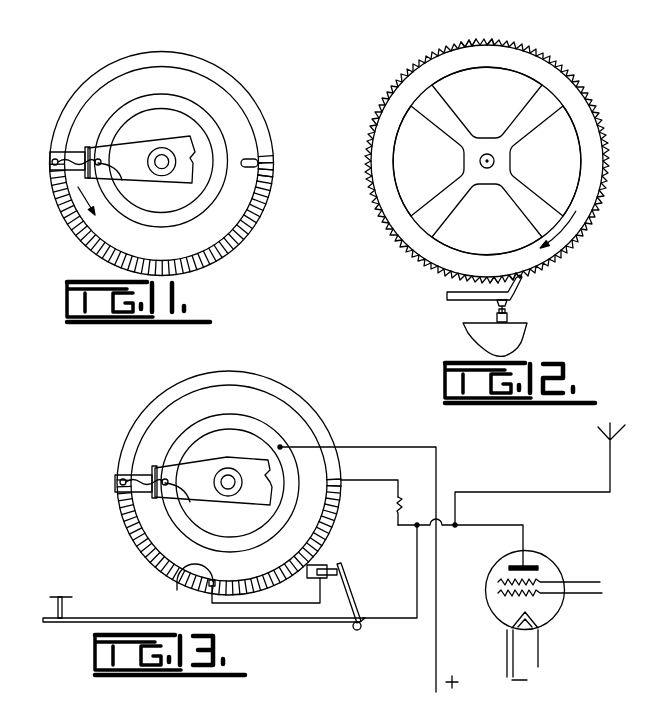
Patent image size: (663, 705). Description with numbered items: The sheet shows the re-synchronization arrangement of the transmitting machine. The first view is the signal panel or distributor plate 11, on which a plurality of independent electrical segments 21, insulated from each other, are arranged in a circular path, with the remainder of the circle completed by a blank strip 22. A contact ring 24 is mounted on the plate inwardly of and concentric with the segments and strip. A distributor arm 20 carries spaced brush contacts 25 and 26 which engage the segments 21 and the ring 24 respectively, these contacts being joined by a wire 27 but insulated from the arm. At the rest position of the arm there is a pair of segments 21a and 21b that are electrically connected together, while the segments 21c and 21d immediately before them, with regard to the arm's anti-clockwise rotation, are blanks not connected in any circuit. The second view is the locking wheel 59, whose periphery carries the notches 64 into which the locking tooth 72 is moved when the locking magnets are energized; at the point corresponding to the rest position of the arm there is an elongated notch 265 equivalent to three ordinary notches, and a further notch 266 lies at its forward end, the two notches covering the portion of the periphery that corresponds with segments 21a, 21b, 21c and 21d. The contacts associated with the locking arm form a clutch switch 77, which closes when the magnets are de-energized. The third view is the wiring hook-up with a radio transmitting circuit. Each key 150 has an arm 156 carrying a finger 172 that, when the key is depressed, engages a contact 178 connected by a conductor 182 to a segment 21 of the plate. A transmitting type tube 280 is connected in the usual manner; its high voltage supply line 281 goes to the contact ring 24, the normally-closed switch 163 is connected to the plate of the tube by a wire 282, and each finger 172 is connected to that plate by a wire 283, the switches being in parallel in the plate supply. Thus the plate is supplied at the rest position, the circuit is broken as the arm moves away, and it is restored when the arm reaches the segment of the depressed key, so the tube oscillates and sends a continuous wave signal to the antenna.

In FIG. 11, the distributor plate 11 is at (178, 52).
In FIG. 13, the distributor plate 11 is at (153, 400).
In FIG. 11, the blank strip 22 is at (83, 83).
In FIG. 13, the blank strip 22 is at (173, 392).
In FIG. 11, the contact ring 24 is at (138, 98).
In FIG. 13, the contact ring 24 is at (178, 440).
In FIG. 11, the distributor arm 20 is at (124, 150).
In FIG. 11, the brush contact 26 is at (122, 180).
In FIG. 13, the brush contact 26 is at (190, 502).
In FIG. 11, the wire 27 is at (77, 152).
In FIG. 13, the wire 27 is at (133, 472).
In FIG. 11, the brush contact 25 is at (52, 164).
In FIG. 13, the brush contact 25 is at (119, 482).
In FIG. 11, the segment 21a is at (268, 157).
In FIG. 13, the segment 21a is at (343, 480).
In FIG. 11, the segment 21b is at (270, 165).
In FIG. 11, the blank segment 21c is at (270, 175).
In FIG. 11, the blank segment 21d is at (270, 185).
In FIG. 12, the locking wheel 59 is at (540, 67).
In FIG. 12, the notches 64 is at (590, 95).
In FIG. 12, the elongated notch 265 is at (468, 43).
In FIG. 12, the notch 266 is at (493, 43).
In FIG. 12, the locking tooth 72 is at (522, 290).
In FIG. 12, the clutch switch 77 is at (507, 308).
In FIG. 13, the key 150 is at (57, 597).
In FIG. 13, the key arm 156 is at (92, 618).
In FIG. 13, the electrical segment 21 is at (183, 580).
In FIG. 13, the conductor 182 is at (230, 608).
In FIG. 13, the contact 178 is at (327, 563).
In FIG. 13, the finger 172 is at (343, 570).
In FIG. 13, the high voltage supply line 281 is at (345, 447).
In FIG. 13, the switch 163 is at (397, 500).
In FIG. 13, the wire 282 is at (480, 525).
In FIG. 13, the wire 283 is at (417, 587).
In FIG. 13, the transmitting type tube 280 is at (548, 613).